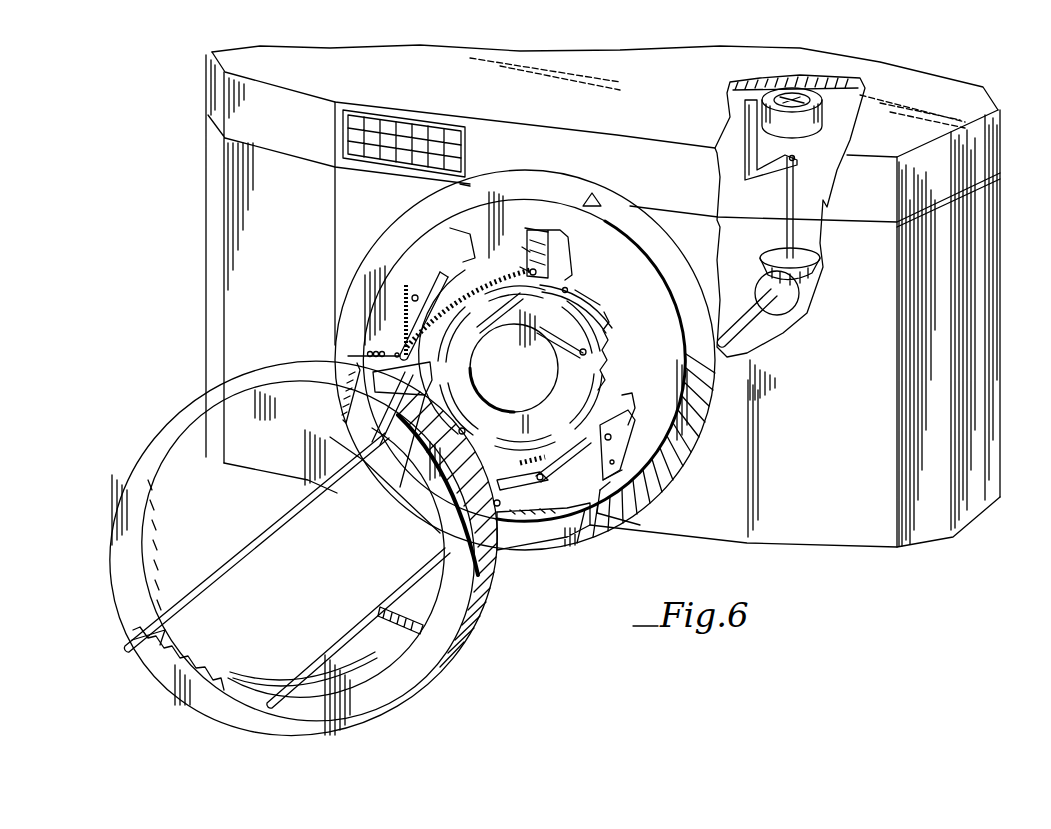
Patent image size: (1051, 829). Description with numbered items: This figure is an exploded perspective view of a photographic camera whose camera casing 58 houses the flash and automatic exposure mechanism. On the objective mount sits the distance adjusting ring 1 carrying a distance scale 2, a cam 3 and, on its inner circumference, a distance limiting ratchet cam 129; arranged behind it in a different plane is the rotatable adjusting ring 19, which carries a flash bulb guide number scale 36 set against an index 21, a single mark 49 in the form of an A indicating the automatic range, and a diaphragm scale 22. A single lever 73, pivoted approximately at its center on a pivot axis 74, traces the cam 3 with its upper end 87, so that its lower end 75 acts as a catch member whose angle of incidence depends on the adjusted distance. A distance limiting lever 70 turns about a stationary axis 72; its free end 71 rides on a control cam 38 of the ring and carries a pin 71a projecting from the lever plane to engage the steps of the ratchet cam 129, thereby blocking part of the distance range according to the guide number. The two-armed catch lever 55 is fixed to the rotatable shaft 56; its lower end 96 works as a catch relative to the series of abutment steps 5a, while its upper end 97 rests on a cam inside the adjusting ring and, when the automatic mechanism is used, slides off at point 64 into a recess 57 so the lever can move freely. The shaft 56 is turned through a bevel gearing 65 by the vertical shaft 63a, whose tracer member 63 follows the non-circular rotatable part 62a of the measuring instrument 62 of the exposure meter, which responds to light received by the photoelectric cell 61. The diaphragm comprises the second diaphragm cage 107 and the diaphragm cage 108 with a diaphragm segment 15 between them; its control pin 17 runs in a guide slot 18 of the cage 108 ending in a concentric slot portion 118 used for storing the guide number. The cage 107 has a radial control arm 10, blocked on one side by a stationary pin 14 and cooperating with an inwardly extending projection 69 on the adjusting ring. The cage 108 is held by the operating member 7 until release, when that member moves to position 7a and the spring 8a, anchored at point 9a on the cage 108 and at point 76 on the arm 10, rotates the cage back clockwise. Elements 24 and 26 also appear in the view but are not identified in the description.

The distance adjusting ring 1 is at (473, 610).
The distance scale 2 is at (297, 367).
The cam 3 is at (310, 677).
The series of abutment steps 5a is at (617, 340).
The operating member 7 is at (369, 324).
The position of operating member 7a is at (520, 267).
The spring 8a is at (463, 280).
The attachment point 9a is at (402, 408).
The radial control arm 10 is at (543, 230).
The stationary pin 14 is at (522, 247).
The diaphragm segment 15 is at (483, 390).
The control pin 17 is at (520, 318).
The guide slot 18 is at (480, 323).
The adjusting ring 19 is at (708, 380).
The index 21 is at (549, 163).
The diaphragm scale 22 is at (668, 248).
The plate 24 is at (470, 233).
The blade pivot 26 is at (535, 363).
The flash bulb guide number scale 36 is at (477, 185).
The control cam 38 is at (402, 487).
The single mark 49 is at (598, 197).
The catch member lever 55 is at (620, 420).
The rotatable shaft 56 is at (753, 315).
The recess 57 is at (592, 513).
The camera casing 58 is at (948, 252).
The photoelectric cell 61 is at (372, 118).
The measuring instrument 62 is at (822, 120).
The rotatable part 62a is at (773, 97).
The tracer member 63 is at (748, 118).
The vertical shaft 63a is at (787, 202).
The point 64 is at (610, 482).
The bevel gearing 65 is at (817, 273).
The inwardly extending projection 69 is at (525, 228).
The distance limiting lever 70 is at (415, 330).
The free end 71 is at (363, 465).
The pin 71a is at (200, 580).
The stationary axis 72 is at (444, 290).
The lever 73 is at (527, 490).
The pivot axis 74 is at (588, 440).
The lower end 75 is at (565, 450).
The attachment point 76 is at (537, 272).
The upper end 87 is at (415, 572).
The lower end 96 is at (630, 397).
The upper end 97 is at (622, 470).
The second rotatable diaphragm cage 107 is at (580, 295).
The diaphragm cage 108 is at (580, 313).
The concentric slot portion 118 is at (572, 283).
The distance limiting ratchet cam 129 is at (160, 665).